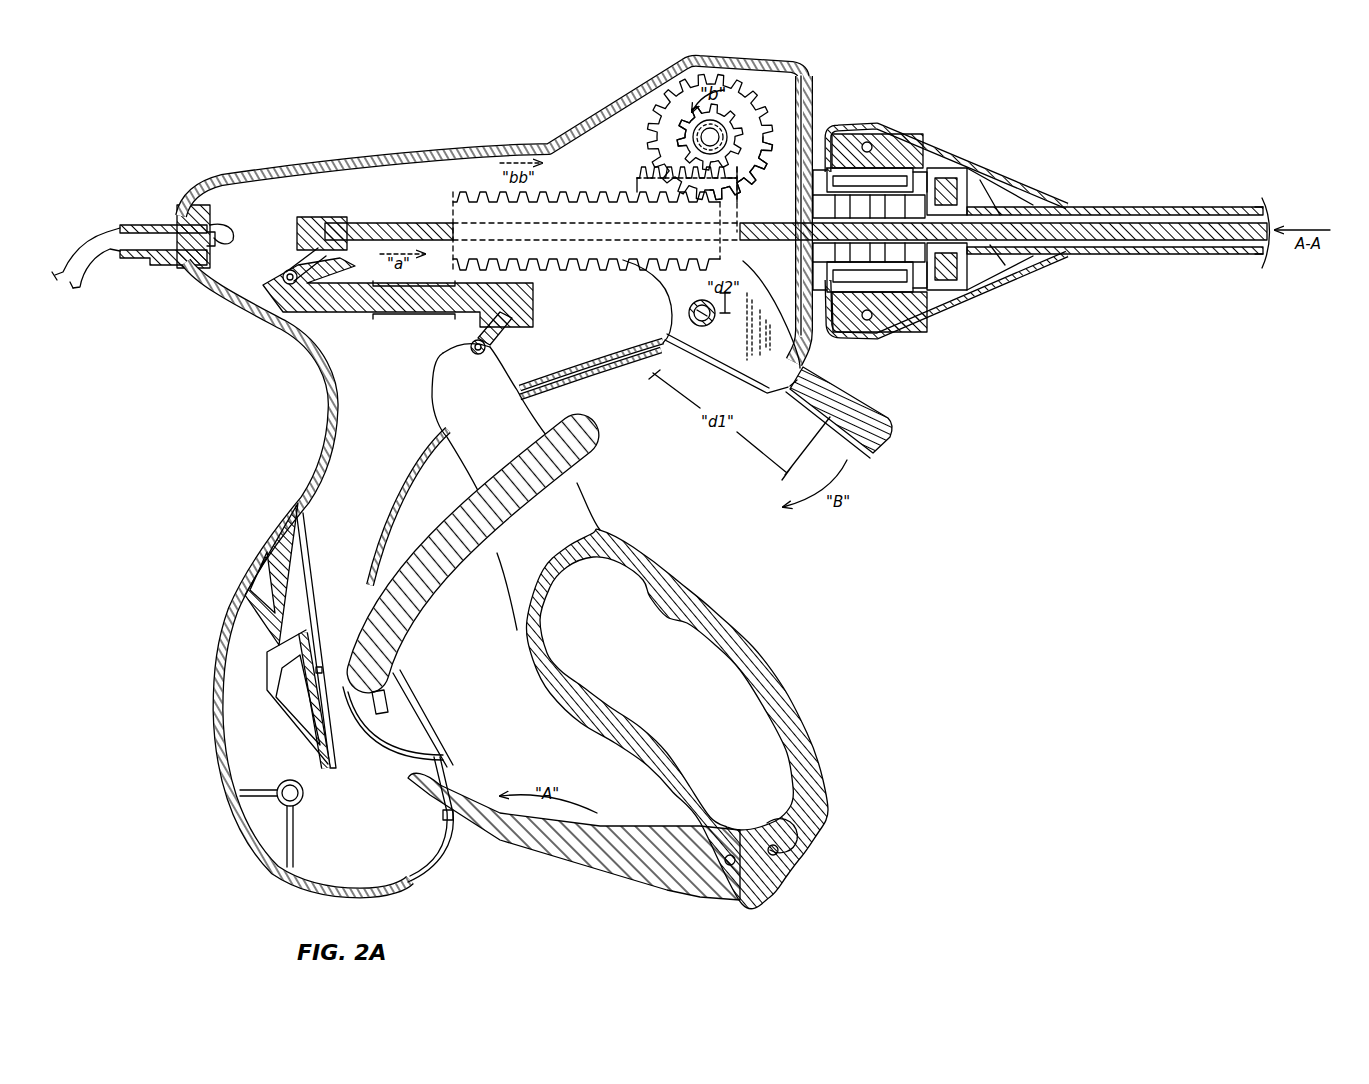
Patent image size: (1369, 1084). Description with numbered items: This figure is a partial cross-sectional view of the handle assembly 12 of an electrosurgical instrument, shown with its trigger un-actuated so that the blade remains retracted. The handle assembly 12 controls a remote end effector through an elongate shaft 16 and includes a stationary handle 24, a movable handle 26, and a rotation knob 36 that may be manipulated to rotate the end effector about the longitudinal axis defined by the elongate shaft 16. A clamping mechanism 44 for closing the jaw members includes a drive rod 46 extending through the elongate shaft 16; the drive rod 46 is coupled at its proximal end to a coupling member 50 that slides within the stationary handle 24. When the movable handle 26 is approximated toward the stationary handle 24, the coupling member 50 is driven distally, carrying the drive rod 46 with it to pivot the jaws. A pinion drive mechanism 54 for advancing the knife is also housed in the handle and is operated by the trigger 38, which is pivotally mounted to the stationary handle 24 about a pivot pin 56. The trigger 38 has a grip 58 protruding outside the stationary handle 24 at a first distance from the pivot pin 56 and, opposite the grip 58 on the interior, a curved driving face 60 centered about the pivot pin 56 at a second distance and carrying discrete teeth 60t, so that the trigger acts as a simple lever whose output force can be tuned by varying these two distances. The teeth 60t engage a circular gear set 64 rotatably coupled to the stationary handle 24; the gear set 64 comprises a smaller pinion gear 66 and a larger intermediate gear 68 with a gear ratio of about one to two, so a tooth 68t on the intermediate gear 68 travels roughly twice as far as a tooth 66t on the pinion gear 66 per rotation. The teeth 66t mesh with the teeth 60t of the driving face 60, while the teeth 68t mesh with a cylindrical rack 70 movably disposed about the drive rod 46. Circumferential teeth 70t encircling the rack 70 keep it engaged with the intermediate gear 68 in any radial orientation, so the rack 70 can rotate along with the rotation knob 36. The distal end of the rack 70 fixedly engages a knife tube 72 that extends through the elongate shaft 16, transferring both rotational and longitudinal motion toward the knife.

The handle assembly 12 is at (175, 163).
The elongate shaft 16 is at (1247, 190).
The stationary handle 24 is at (225, 623).
The movable handle 26 is at (793, 707).
The rotation knob 36 is at (873, 127).
The trigger 38 is at (883, 447).
The clamping mechanism 44 is at (412, 410).
The drive rod 46 is at (397, 230).
The coupling member 50 is at (363, 310).
The pinion drive mechanism 54 is at (635, 72).
The pivot pin 56 is at (690, 303).
The grip 58 is at (853, 383).
The driving face 60 is at (643, 167).
The teeth 60t is at (640, 183).
The gear set 64 is at (752, 84).
The pinion gear 66 is at (735, 120).
The teeth 66t is at (742, 133).
The intermediate gear 68 is at (670, 145).
The teeth 68t is at (667, 148).
The cylindrical rack 70 is at (497, 210).
The circumferential teeth 70t is at (460, 199).
The knife tube 72 is at (1123, 217).